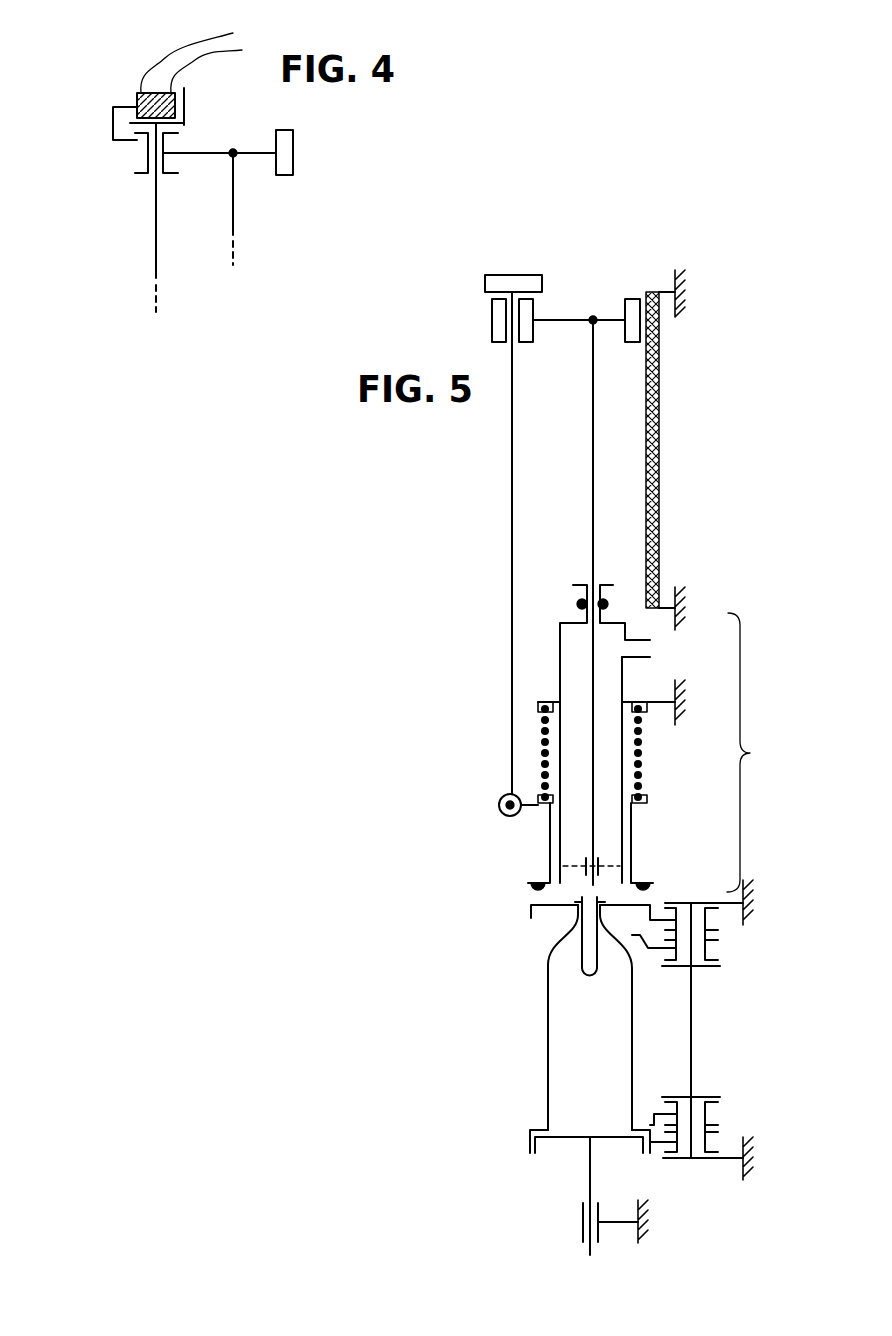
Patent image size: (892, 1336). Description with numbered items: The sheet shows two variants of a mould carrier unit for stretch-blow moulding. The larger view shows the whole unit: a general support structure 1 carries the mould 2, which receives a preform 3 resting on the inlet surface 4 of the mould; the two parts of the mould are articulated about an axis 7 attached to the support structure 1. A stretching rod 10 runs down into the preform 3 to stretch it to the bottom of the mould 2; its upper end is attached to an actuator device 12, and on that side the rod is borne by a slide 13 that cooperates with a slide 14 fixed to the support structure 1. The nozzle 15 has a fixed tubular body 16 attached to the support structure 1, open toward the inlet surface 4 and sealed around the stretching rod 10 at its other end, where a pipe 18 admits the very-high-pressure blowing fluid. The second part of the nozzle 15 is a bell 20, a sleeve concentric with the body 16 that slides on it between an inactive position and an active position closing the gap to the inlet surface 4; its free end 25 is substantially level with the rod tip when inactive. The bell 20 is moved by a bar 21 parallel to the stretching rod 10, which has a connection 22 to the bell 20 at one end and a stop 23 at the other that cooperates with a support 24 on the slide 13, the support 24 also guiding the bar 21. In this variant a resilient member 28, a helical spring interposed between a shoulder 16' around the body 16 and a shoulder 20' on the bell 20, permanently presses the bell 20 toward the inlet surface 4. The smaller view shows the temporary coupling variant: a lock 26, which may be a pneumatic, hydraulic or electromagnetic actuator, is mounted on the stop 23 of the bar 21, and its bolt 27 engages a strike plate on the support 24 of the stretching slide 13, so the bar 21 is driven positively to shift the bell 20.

In FIG. 5, the support structure 1 is at (680, 276).
In FIG. 5, the mould 2 is at (532, 1053).
In FIG. 5, the preform 3 is at (589, 961).
In FIG. 5, the inlet surface 4 is at (548, 903).
In FIG. 5, the axis 7 is at (692, 1032).
In FIG. 4, the stretching rod 10 is at (234, 207).
In FIG. 5, the stretching rod 10 is at (592, 414).
In FIG. 5, the actuator device 12 is at (690, 386).
In FIG. 4, the slide 13 is at (287, 140).
In FIG. 5, the slide 13 is at (632, 307).
In FIG. 5, the slide 14 is at (660, 531).
In FIG. 5, the nozzle 15 is at (755, 752).
In FIG. 5, the body 16 is at (554, 734).
In FIG. 5, the shoulder 16' is at (565, 731).
In FIG. 5, the pipe 18 is at (660, 647).
In FIG. 5, the bell 20 is at (523, 846).
In FIG. 5, the shoulder 20' is at (668, 841).
In FIG. 4, the bar 21 is at (155, 237).
In FIG. 5, the bar 21 is at (511, 470).
In FIG. 5, the connection 22 is at (499, 802).
In FIG. 4, the stop 23 is at (183, 128).
In FIG. 5, the stop 23 is at (500, 283).
In FIG. 4, the support 24 is at (114, 173).
In FIG. 5, the support 24 is at (496, 318).
In FIG. 5, the free end 25 is at (646, 878).
In FIG. 4, the lock 26 is at (126, 76).
In FIG. 4, the bolt 27 is at (92, 120).
In FIG. 5, the resilient member 28 is at (642, 776).